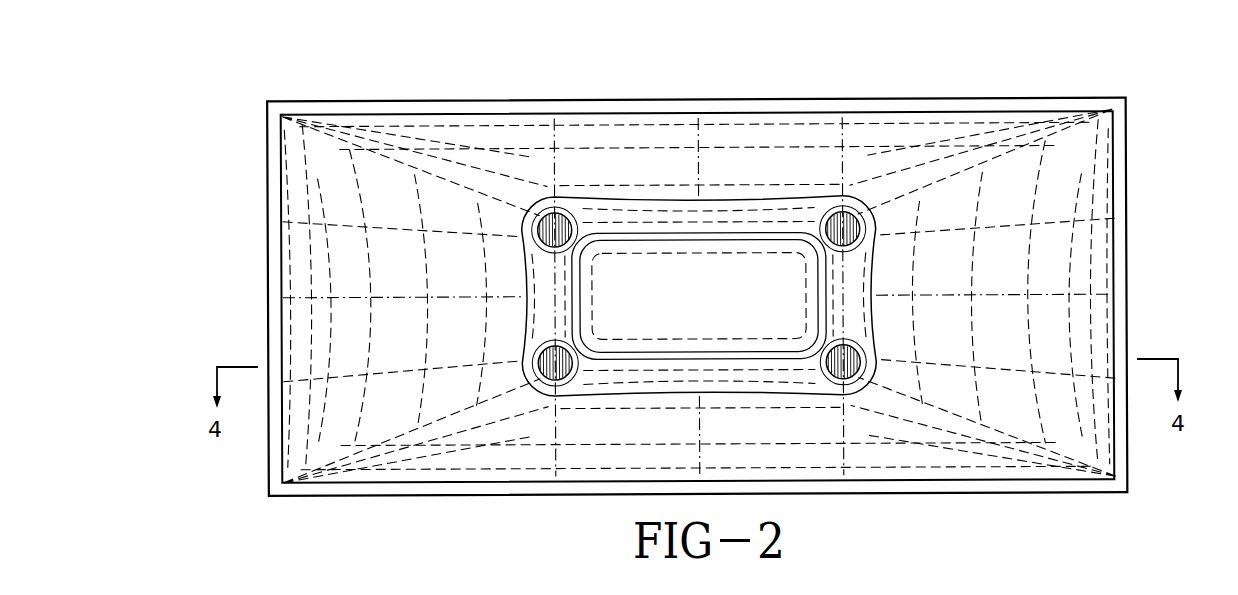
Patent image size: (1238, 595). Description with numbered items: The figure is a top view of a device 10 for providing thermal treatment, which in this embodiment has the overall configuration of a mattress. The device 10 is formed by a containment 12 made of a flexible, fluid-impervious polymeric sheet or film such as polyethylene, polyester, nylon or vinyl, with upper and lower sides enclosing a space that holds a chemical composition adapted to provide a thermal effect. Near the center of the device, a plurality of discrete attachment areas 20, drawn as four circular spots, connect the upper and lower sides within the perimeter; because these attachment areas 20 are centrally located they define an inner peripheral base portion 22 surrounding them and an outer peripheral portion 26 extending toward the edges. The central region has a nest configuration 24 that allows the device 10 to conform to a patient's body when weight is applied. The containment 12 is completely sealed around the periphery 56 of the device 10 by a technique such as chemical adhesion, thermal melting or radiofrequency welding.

The device 10 is at (226, 132).
The containment 12 is at (1118, 187).
The discrete attachment areas 20 is at (555, 224).
The inner peripheral base portion 22 is at (738, 258).
The nest configuration 24 is at (682, 311).
The outer peripheral portion 26 is at (400, 290).
The periphery 56 is at (1127, 272).